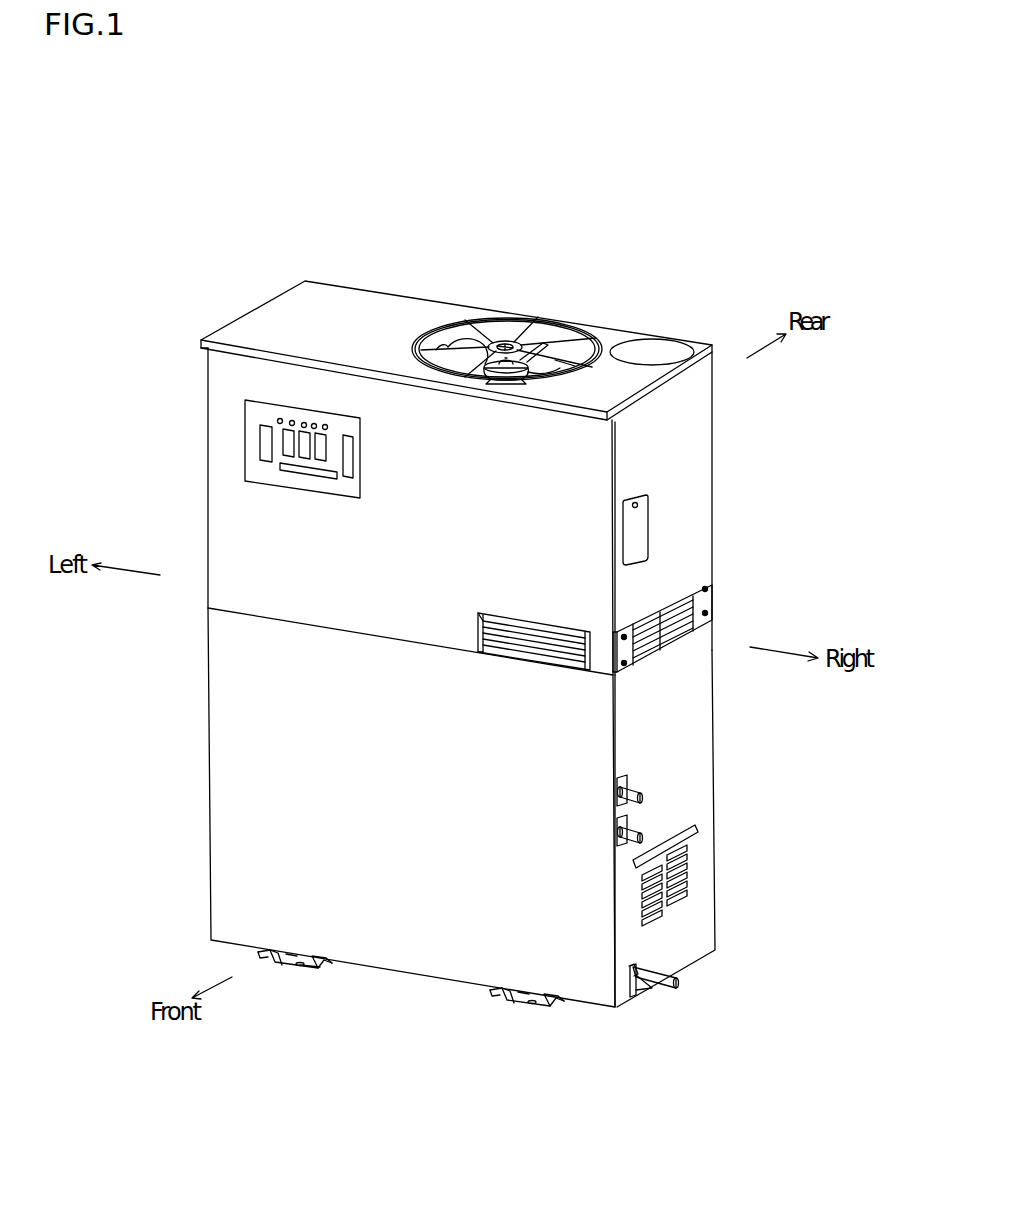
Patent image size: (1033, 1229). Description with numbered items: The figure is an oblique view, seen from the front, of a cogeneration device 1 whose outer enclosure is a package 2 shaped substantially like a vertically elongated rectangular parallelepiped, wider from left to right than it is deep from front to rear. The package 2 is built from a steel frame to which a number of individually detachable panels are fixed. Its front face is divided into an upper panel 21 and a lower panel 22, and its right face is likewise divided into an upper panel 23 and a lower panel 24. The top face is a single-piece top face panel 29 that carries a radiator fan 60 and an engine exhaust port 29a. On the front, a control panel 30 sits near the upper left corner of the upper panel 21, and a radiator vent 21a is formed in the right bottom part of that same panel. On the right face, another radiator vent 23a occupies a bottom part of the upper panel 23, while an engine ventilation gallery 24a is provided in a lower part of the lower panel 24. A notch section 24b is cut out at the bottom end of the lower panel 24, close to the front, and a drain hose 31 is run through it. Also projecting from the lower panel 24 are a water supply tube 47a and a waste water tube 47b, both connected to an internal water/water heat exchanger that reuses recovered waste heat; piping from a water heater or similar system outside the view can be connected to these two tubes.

The cogeneration device 1 is at (721, 236).
The package 2 is at (373, 280).
The upper panel 21 is at (244, 528).
The radiator vent 21a is at (550, 650).
The lower panel 22 is at (244, 783).
The upper panel 23 is at (684, 485).
The radiator vent 23a is at (687, 635).
The lower panel 24 is at (685, 743).
The engine ventilation gallery 24a is at (688, 873).
The notch section 24b is at (634, 995).
The top face panel 29 is at (279, 314).
The engine exhaust port 29a is at (666, 344).
The control panel 30 is at (277, 440).
The drain hose 31 is at (667, 985).
The water supply tube 47a is at (680, 784).
The waste water tube 47b is at (680, 818).
The radiator fan 60 is at (508, 330).